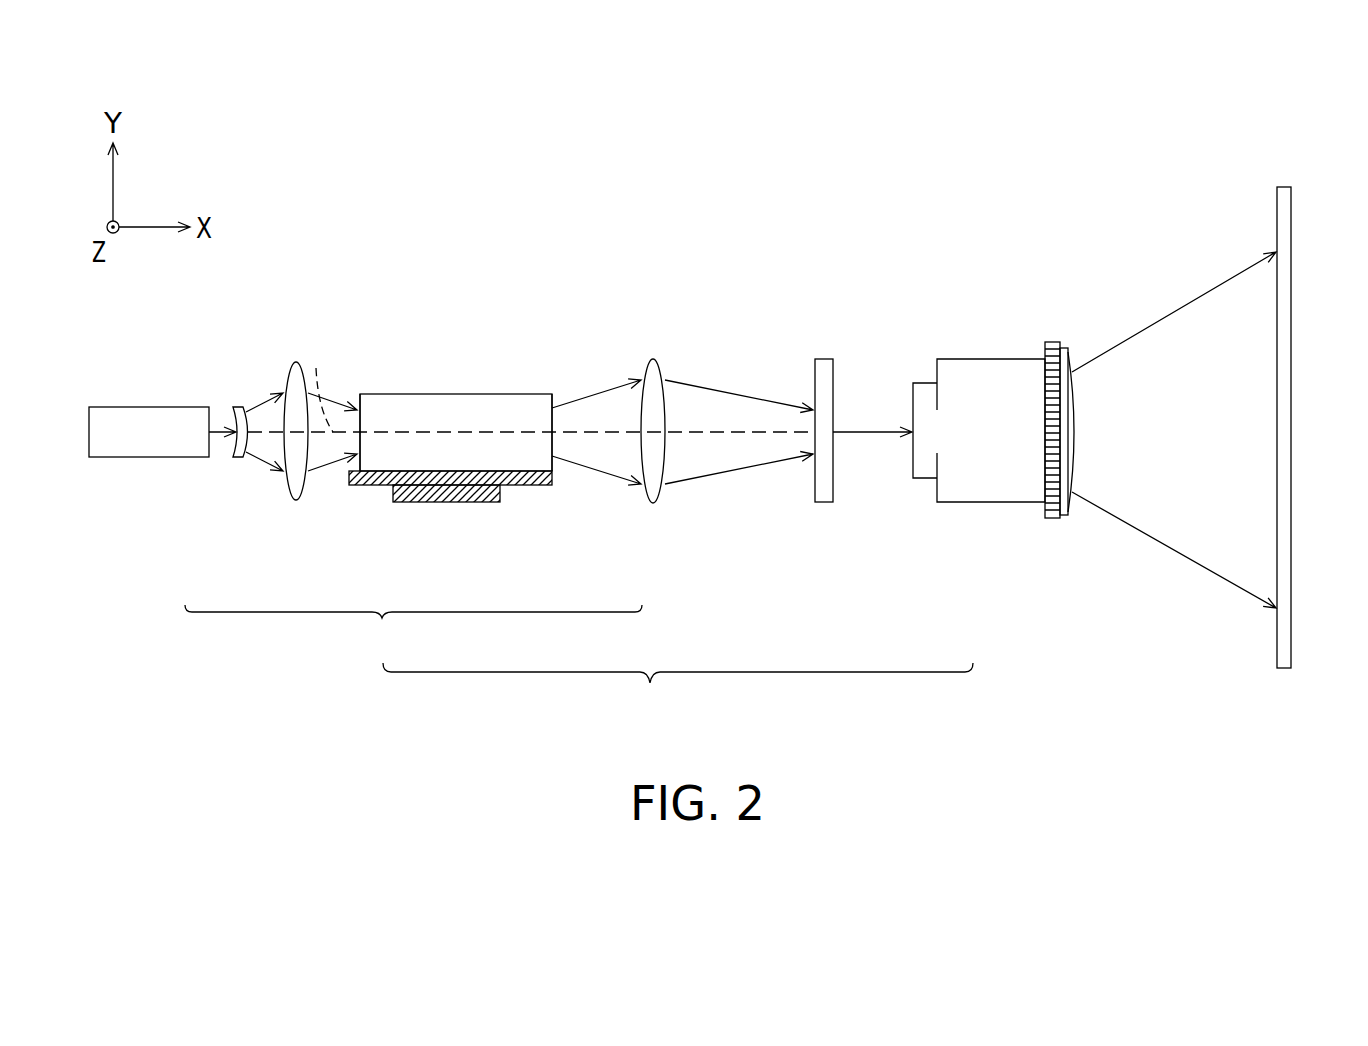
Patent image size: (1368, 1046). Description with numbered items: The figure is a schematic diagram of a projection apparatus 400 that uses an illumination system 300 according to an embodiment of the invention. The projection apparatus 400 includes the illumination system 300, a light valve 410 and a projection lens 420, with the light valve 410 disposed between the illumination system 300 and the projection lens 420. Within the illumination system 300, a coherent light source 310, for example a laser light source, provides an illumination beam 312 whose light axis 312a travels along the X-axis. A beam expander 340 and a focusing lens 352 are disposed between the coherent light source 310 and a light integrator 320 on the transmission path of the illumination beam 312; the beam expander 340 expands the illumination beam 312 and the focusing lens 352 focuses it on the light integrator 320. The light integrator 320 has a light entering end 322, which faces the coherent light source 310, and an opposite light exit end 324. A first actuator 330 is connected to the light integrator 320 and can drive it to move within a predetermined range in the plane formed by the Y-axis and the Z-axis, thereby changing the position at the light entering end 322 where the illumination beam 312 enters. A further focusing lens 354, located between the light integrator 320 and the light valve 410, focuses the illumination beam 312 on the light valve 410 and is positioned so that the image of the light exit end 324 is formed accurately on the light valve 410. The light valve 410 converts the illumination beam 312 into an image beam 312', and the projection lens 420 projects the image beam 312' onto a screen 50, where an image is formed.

The screen 50 is at (1288, 643).
The illumination system 300 is at (413, 632).
The coherent light source 310 is at (172, 457).
The illumination beam 312 is at (214, 385).
The light axis 312a is at (327, 382).
The image beam 312' is at (872, 373).
The light integrator 320 is at (430, 462).
The light entering end 322 is at (352, 386).
The light exit end 324 is at (565, 393).
The first actuator 330 is at (523, 480).
The beam expander 340 is at (240, 457).
The focusing lens 352 is at (296, 500).
The focusing lens 354 is at (648, 503).
The projection apparatus 400 is at (678, 691).
The light valve 410 is at (825, 505).
The projection lens 420 is at (972, 505).